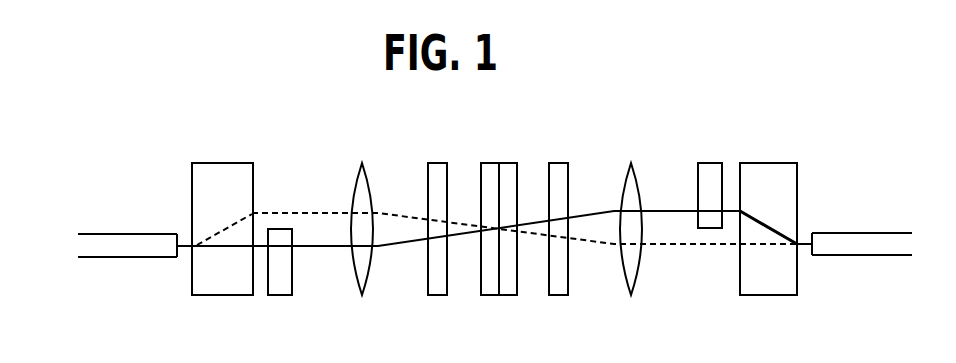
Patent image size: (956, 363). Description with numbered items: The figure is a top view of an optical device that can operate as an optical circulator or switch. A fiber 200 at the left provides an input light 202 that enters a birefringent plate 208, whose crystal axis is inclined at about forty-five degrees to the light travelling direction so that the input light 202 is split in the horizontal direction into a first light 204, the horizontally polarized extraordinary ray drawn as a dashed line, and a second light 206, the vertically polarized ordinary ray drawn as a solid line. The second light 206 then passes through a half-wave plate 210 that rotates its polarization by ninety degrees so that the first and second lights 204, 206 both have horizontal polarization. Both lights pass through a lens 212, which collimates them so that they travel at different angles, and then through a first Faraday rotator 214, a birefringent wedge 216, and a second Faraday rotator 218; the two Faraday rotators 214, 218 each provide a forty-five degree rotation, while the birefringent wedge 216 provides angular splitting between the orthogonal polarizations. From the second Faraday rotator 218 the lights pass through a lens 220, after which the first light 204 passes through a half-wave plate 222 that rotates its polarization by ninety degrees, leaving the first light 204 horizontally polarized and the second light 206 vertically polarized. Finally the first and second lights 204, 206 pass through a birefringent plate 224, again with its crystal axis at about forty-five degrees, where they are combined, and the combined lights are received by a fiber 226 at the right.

The fiber 200 is at (103, 240).
The input light 202 is at (186, 247).
The first light 204 is at (283, 206).
The second light 206 is at (258, 247).
The birefringent plate 208 is at (217, 163).
The half-wave plate 210 is at (288, 287).
The lens 212 is at (360, 163).
The first Faraday rotator 214 is at (437, 172).
The birefringent wedge 216 is at (510, 280).
The second Faraday rotator 218 is at (560, 285).
The lens 220 is at (632, 165).
The half-wave plate 222 is at (708, 167).
The birefringent plate 224 is at (787, 170).
The fiber 226 is at (857, 245).